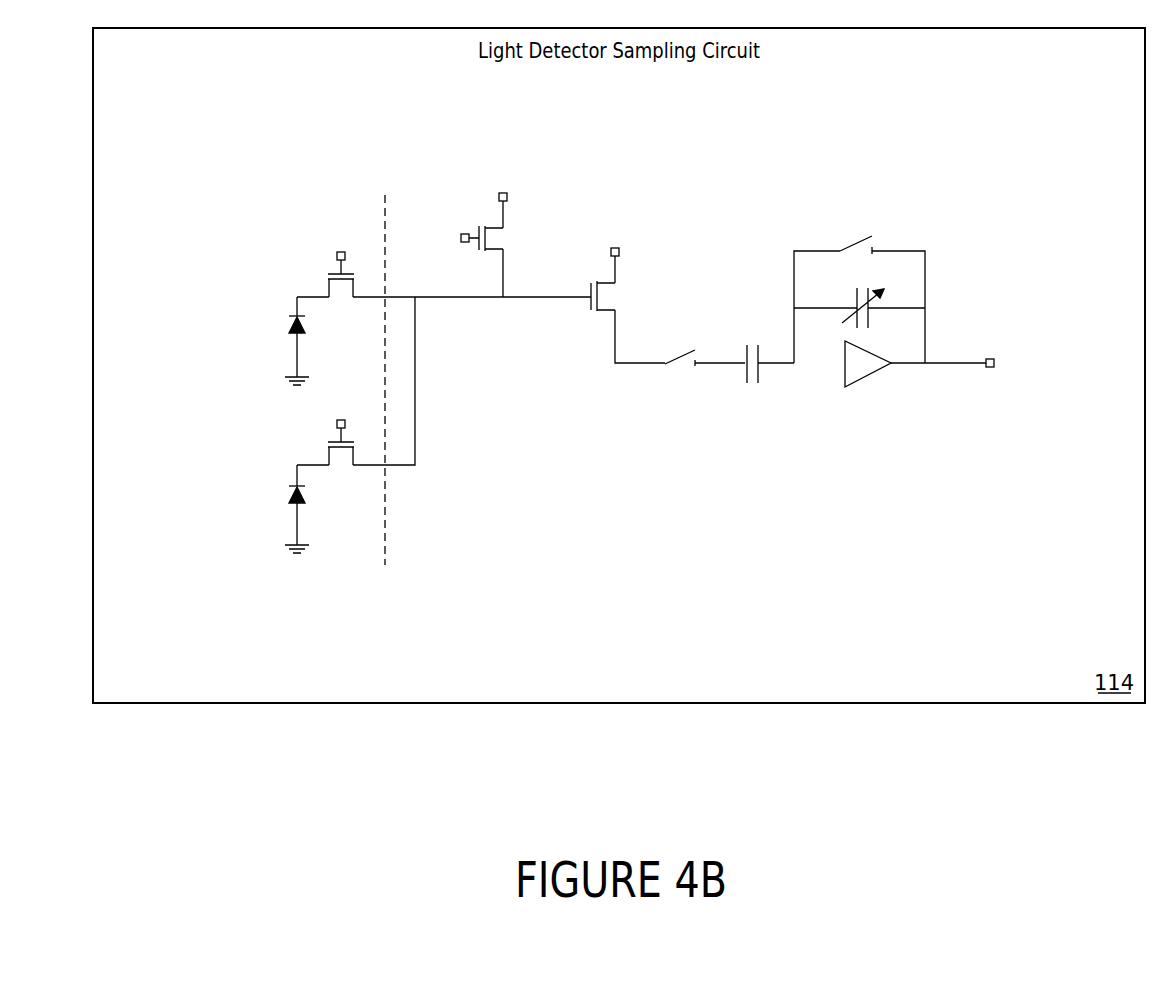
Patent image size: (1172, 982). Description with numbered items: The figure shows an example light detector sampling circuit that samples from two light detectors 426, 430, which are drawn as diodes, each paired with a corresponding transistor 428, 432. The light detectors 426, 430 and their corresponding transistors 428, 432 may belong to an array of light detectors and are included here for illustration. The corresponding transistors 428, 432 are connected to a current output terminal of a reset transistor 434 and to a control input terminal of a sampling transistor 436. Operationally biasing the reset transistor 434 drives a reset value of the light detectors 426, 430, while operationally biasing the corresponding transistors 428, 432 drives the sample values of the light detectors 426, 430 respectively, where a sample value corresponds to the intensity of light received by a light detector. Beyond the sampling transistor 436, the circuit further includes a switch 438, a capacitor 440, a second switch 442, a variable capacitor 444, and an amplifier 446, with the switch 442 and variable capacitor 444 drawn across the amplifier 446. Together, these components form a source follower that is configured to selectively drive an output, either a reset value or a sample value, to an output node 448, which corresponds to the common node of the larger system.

The light detector 426 is at (297, 343).
The corresponding transistor 428 is at (329, 294).
The light detector 430 is at (297, 511).
The corresponding transistor 432 is at (329, 462).
The reset transistor 434 is at (500, 226).
The sampling transistor 436 is at (613, 282).
The switch 438 is at (665, 360).
The capacitor 440 is at (731, 362).
The switch 442 is at (838, 250).
The variable capacitor 444 is at (815, 308).
The amplifier 446 is at (862, 368).
The output node 448 is at (990, 358).